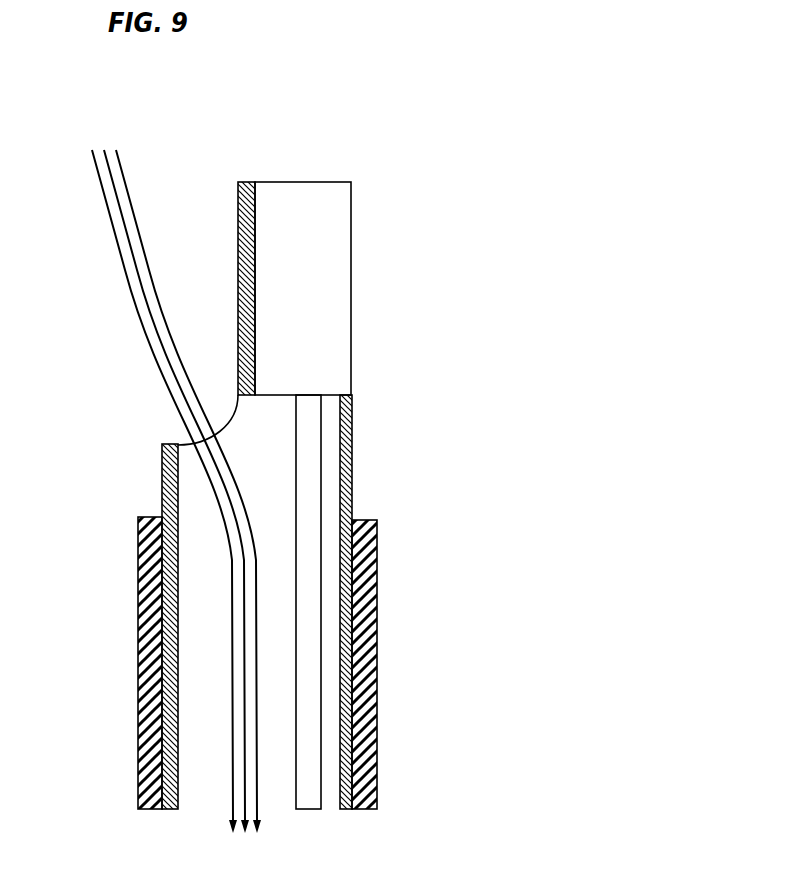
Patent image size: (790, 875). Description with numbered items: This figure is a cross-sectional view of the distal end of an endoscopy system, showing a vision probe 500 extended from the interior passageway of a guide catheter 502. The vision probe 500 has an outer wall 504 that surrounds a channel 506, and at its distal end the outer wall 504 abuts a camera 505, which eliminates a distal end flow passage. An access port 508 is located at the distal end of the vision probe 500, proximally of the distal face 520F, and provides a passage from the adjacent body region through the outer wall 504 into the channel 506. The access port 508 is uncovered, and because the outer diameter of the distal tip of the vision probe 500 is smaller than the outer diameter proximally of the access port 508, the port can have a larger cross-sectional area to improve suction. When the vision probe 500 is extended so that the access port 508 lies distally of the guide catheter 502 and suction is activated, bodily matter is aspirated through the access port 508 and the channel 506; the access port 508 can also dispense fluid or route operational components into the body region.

The vision probe 500 is at (239, 197).
The guide catheter 502 is at (377, 747).
The outer wall 504 is at (172, 565).
The camera 505 is at (303, 495).
The channel 506 is at (212, 585).
The access port 508 is at (220, 425).
The distal face 520F is at (353, 150).